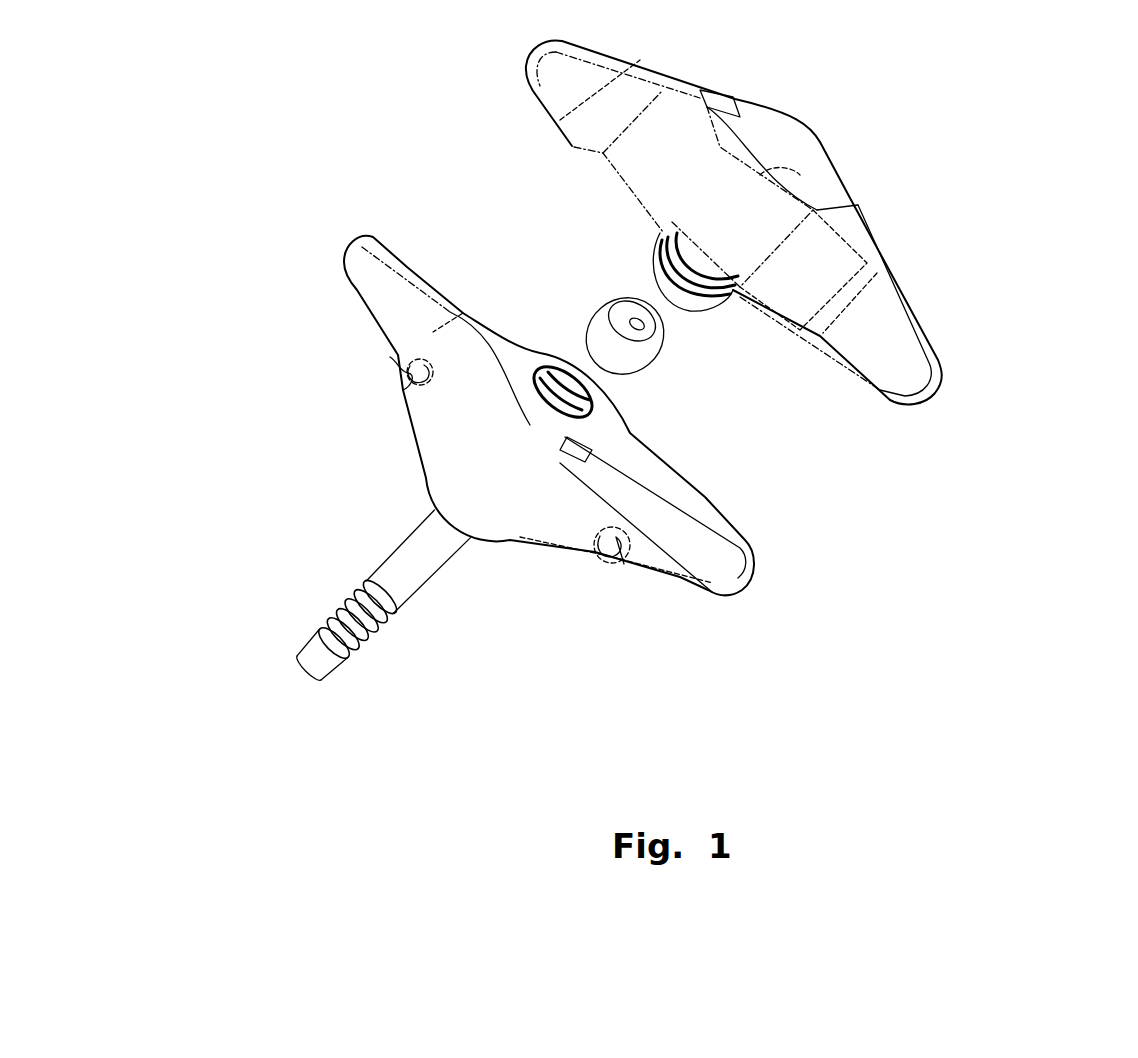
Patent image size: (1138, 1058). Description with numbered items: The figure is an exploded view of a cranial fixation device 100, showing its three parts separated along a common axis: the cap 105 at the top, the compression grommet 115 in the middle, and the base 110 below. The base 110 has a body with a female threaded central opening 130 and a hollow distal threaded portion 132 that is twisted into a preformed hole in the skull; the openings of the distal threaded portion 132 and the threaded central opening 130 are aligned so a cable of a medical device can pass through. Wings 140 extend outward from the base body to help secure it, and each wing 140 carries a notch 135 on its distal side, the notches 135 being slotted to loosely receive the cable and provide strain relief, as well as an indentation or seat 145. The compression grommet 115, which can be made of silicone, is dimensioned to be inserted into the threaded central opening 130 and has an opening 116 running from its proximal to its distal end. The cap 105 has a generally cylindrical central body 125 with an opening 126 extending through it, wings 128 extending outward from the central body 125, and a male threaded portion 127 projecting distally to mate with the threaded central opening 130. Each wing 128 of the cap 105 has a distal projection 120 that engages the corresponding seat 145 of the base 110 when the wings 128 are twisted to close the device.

The cranial fixation device 100 is at (805, 757).
The cap 105 is at (917, 307).
The base 110 is at (403, 455).
The compression grommet 115 is at (590, 303).
The opening 116 is at (637, 324).
The distal projection 120 is at (571, 147).
The central body 125 is at (742, 220).
The opening 126 is at (797, 172).
The threaded portion 127 is at (742, 293).
The wings 128 is at (705, 95).
The threaded central opening 130 is at (565, 405).
The distal threaded portion 132 is at (314, 596).
The notches 135 is at (390, 310).
The wings 140 is at (735, 578).
The seat 145 is at (545, 422).